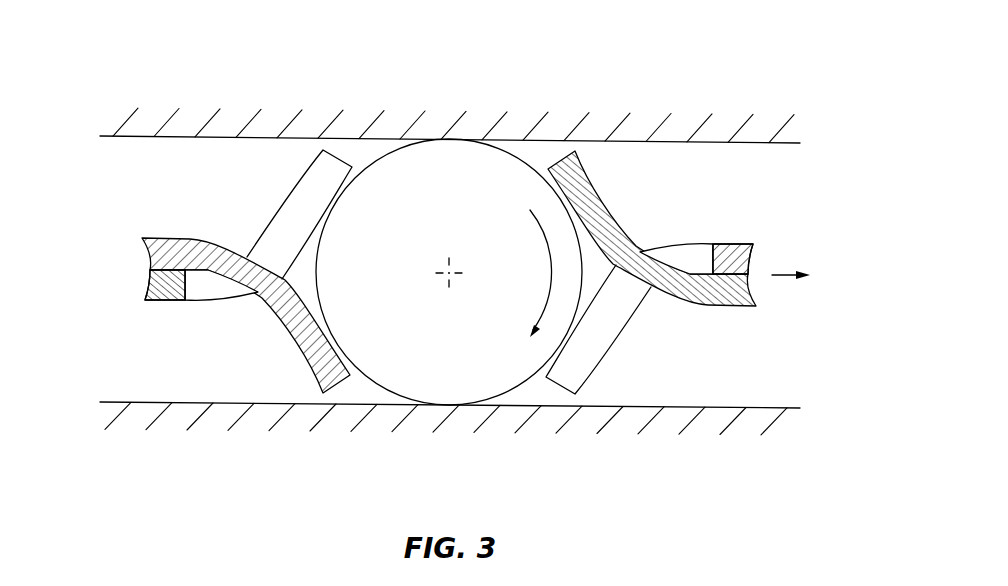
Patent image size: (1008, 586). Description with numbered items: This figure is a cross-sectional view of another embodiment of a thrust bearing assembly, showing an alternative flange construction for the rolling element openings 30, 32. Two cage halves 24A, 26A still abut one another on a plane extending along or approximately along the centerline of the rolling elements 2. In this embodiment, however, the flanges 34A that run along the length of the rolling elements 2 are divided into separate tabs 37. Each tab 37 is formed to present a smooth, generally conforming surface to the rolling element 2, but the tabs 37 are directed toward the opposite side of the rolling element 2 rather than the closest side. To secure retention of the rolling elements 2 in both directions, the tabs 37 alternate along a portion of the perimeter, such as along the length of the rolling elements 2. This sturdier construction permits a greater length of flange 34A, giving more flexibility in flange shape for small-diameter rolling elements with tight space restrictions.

The rolling element 2 is at (450, 182).
The cage half 24A is at (199, 284).
The cage half 26A is at (155, 302).
The rolling element opening 30 is at (534, 160).
The rolling element opening 32 is at (538, 386).
The flange 34A is at (252, 218).
The tab 37 is at (307, 180).